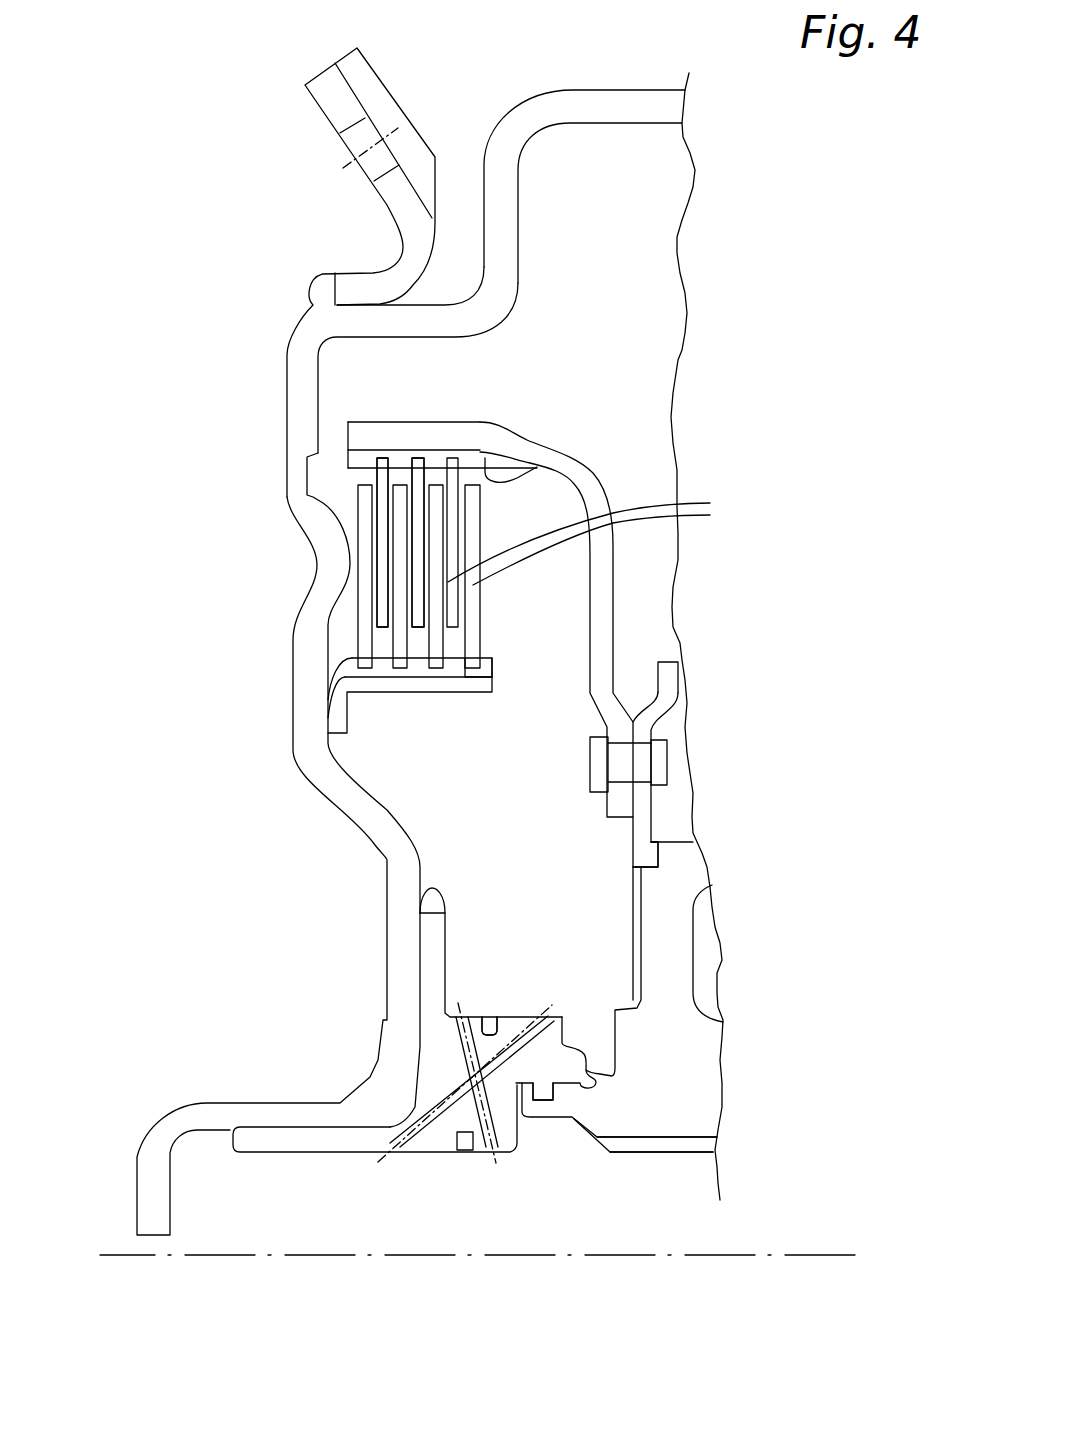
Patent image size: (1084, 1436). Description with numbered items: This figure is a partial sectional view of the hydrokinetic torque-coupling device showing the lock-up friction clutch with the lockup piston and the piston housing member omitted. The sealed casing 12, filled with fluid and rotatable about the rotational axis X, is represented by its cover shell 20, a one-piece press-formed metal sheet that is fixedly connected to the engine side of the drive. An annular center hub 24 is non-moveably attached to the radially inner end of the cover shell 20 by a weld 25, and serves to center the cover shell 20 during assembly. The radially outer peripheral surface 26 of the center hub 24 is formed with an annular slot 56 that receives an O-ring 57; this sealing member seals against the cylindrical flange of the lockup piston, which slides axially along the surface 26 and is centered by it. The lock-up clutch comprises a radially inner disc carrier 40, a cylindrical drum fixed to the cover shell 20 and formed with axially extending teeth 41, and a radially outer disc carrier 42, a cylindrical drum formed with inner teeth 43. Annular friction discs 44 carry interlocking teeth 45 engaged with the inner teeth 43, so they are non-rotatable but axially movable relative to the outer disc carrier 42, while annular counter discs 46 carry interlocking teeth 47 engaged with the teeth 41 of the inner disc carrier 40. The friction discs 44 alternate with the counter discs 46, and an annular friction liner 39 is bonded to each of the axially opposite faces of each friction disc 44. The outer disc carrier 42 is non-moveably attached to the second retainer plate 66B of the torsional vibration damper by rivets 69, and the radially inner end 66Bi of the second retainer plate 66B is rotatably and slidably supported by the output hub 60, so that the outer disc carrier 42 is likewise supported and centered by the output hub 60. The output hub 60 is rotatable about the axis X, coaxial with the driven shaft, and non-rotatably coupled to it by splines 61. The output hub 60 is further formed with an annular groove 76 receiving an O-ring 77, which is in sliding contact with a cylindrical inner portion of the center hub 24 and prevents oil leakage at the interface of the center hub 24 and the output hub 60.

The sealed casing 12 is at (603, 605).
The cover shell 20 is at (360, 803).
The center hub 24 is at (437, 1052).
The weld 25 is at (491, 943).
The outer peripheral surface 26 is at (477, 1017).
The friction liner 39 is at (601, 538).
The inner disc carrier 40 is at (397, 685).
The teeth 41 is at (383, 667).
The outer disc carrier 42 is at (408, 433).
The inner teeth 43 is at (503, 483).
The friction disc 44 is at (418, 555).
The interlocking teeth 45 is at (450, 458).
The counter disc 46 is at (443, 640).
The interlocking teeth 47 is at (473, 667).
The annular slot 56 is at (487, 1022).
The O-ring 57 is at (489, 1026).
The output hub 60 is at (697, 1075).
The splines 61 is at (691, 1153).
The second retainer plate 66B is at (667, 680).
The radially inner end 66Bi is at (642, 842).
The rivets 69 is at (650, 760).
The annular groove 76 is at (553, 1100).
The O-ring 77 is at (543, 1091).
The rotational axis X is at (518, 1258).